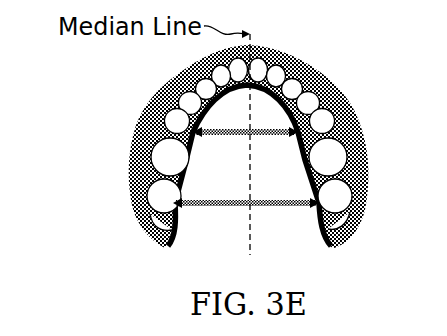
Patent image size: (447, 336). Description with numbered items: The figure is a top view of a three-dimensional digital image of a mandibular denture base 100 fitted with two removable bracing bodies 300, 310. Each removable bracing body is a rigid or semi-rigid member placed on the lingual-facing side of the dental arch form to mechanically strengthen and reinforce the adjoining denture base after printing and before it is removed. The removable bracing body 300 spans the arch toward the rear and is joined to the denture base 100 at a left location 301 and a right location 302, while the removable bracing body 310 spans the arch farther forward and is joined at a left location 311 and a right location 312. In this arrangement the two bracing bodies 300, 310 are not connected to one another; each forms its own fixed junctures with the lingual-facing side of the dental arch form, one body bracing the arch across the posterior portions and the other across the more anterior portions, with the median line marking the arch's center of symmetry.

The mandibular denture base 100 is at (131, 99).
The removable bracing body 300 is at (223, 202).
The joining location 301 is at (172, 206).
The joining location 302 is at (321, 204).
The removable bracing body 310 is at (224, 128).
The joining location 311 is at (191, 133).
The joining location 312 is at (300, 132).